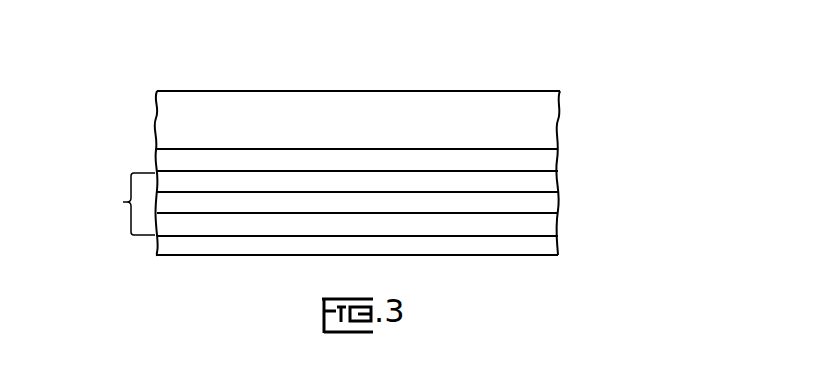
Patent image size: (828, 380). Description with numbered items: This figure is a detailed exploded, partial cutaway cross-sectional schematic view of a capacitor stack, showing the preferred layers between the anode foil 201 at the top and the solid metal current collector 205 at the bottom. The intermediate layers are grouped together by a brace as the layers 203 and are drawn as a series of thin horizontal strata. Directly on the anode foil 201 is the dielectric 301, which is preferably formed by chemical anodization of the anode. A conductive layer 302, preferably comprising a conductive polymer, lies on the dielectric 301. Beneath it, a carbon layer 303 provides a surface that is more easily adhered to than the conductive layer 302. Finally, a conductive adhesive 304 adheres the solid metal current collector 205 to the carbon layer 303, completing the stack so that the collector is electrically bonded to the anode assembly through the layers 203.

The anode foil 201 is at (409, 96).
The layers between the anode foil and solid metal current collector 203 is at (123, 202).
The dielectric 301 is at (545, 160).
The conductive layer 302 is at (545, 181).
The carbon layer 303 is at (545, 203).
The conductive adhesive 304 is at (543, 218).
The solid metal current collector 205 is at (550, 243).